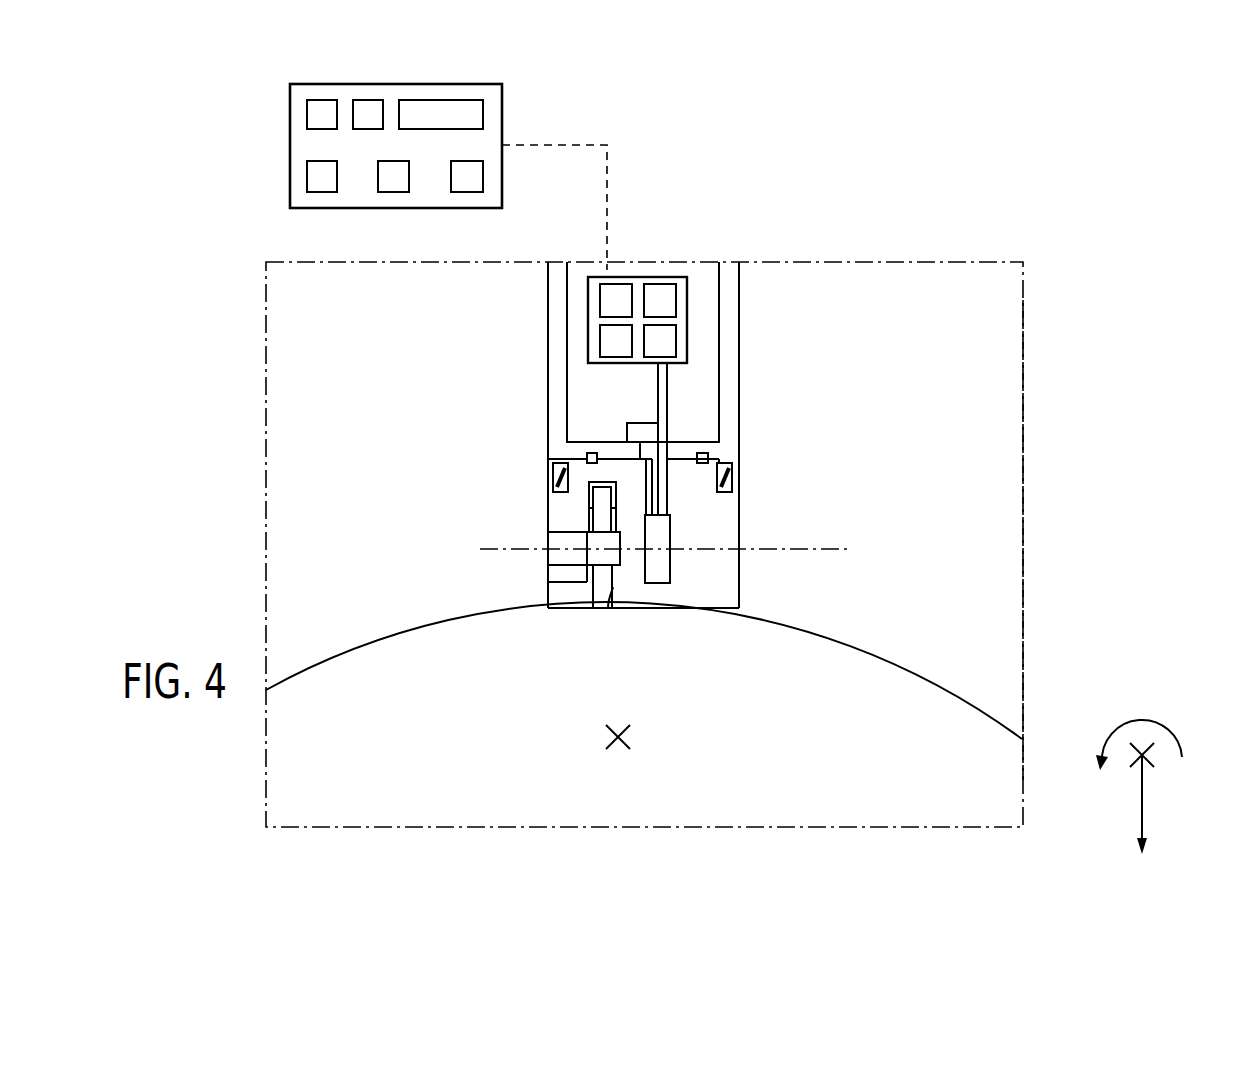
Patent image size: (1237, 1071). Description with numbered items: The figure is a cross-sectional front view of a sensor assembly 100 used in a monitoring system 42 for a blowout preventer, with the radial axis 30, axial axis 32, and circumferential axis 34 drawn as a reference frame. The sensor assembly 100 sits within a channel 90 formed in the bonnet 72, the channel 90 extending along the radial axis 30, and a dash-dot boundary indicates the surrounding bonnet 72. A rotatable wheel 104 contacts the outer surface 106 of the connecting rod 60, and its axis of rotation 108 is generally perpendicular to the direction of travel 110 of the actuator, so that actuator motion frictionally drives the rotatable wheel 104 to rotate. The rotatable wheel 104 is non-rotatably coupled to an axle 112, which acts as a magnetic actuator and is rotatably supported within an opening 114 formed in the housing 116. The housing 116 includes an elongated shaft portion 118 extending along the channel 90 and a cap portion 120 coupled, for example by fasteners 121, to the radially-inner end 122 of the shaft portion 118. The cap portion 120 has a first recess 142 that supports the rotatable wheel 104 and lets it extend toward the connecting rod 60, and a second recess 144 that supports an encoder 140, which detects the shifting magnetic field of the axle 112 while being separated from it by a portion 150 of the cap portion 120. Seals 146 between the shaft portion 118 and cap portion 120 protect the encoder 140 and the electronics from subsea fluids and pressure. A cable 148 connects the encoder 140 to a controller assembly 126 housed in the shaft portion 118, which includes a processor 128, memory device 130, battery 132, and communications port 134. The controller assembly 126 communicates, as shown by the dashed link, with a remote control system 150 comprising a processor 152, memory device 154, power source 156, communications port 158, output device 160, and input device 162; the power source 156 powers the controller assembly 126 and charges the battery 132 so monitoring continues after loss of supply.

The radial axis 30 is at (1142, 800).
The axial axis 32 is at (1133, 750).
The circumferential axis 34 is at (1142, 715).
The monitoring system 42 is at (793, 157).
The connecting rod 60 is at (863, 812).
The bonnet 72 is at (992, 458).
The channel 90 is at (741, 288).
The sensor assembly 100 is at (805, 230).
The rotatable wheel 104 is at (599, 517).
The outer surface 106 is at (787, 627).
The axis of rotation 108 is at (797, 553).
The direction of travel 110 is at (614, 748).
The axle 112 is at (595, 537).
The opening 114 is at (562, 582).
The housing 116 is at (750, 455).
The shaft portion 118 is at (730, 350).
The cap portion 120 is at (722, 520).
The fasteners 121 is at (591, 452).
The radially-inner end 122 is at (720, 438).
The controller assembly 126 is at (637, 277).
The processor 128 is at (676, 340).
The memory device 130 is at (600, 340).
The battery 132 is at (676, 298).
The communications port 134 is at (600, 298).
The encoder 140 is at (662, 570).
The first recess 142 is at (613, 587).
The second recess 144 is at (645, 478).
The seals 146 is at (733, 478).
The cable 148 is at (661, 397).
The control system 150 is at (502, 120).
The processor 152 is at (467, 192).
The memory device 154 is at (393, 192).
The power source 156 is at (441, 100).
The communications port 158 is at (322, 192).
The output device 160 is at (307, 108).
The input device 162 is at (368, 100).